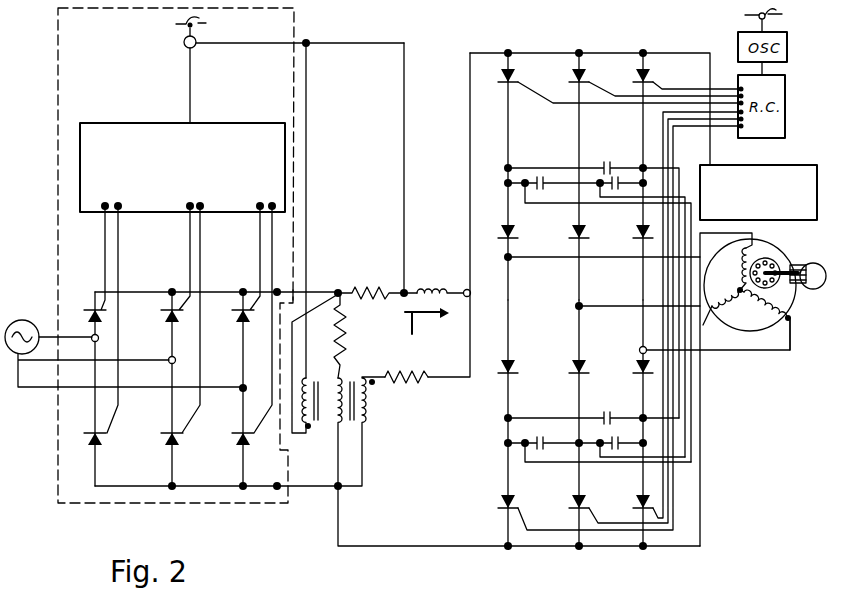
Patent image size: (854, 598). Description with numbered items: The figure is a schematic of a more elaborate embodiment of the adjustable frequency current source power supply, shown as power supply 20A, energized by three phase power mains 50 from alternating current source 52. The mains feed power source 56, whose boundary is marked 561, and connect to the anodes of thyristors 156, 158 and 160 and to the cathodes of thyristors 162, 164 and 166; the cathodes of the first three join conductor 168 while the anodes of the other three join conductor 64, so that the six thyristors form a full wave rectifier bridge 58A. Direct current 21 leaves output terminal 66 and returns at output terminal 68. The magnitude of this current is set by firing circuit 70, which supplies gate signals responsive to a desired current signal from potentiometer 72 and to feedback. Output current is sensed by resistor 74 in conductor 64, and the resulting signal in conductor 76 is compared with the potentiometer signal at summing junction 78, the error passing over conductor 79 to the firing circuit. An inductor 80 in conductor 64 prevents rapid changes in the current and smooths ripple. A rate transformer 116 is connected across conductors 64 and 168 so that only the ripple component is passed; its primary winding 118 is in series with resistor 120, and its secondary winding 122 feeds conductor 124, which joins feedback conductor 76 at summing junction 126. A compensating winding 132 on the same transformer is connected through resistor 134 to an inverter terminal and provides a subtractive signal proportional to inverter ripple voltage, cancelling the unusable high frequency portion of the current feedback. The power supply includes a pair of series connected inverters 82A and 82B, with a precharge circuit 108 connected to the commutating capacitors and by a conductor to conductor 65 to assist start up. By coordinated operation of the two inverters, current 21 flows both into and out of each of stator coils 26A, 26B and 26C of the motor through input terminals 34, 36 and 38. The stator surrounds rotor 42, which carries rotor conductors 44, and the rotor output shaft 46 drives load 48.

The power supply 20A is at (566, 109).
The output current 21 is at (427, 322).
The stator coil 26A is at (730, 270).
The stator coil 26B is at (725, 296).
The stator coil 26C is at (770, 313).
The motor input terminal 34 is at (746, 240).
The motor input terminal 36 is at (715, 325).
The motor input terminal 38 is at (791, 320).
The rotor 42 is at (768, 258).
The rotor conductors 44 is at (782, 262).
The rotor output shaft 46 is at (792, 266).
The load 48 is at (820, 263).
The power mains 50 is at (54, 359).
The alternating current source 52 is at (32, 320).
The power source 56 is at (58, 21).
The enclosure boundary 561 is at (300, 113).
The full wave rectifier bridge 58A is at (170, 389).
The conductor 64 is at (408, 292).
The conductor 65 is at (468, 190).
The output terminal 66 is at (280, 291).
The output terminal 68 is at (280, 487).
The firing circuit 70 is at (136, 118).
The potentiometer 72 is at (206, 21).
The resistor 74 is at (387, 286).
The conductor 76 is at (407, 82).
The summing junction 78 is at (183, 43).
The conductor 79 is at (192, 85).
The inductor 80 is at (441, 290).
The inverter 82A is at (627, 230).
The inverter 82B is at (627, 360).
The precharge circuit 108 is at (812, 166).
The rate transformer 116 is at (326, 336).
The primary winding 118 is at (341, 377).
The resistor 120 is at (348, 338).
The secondary winding 122 is at (318, 369).
The conductor 124 is at (309, 85).
The summing junction 126 is at (308, 42).
The compensating winding 132 is at (368, 404).
The resistor 134 is at (428, 356).
The thyristor 156 is at (88, 313).
The thyristor 158 is at (168, 318).
The thyristor 160 is at (239, 320).
The thyristor 162 is at (100, 446).
The thyristor 164 is at (177, 446).
The thyristor 166 is at (248, 446).
The conductor 168 is at (338, 542).